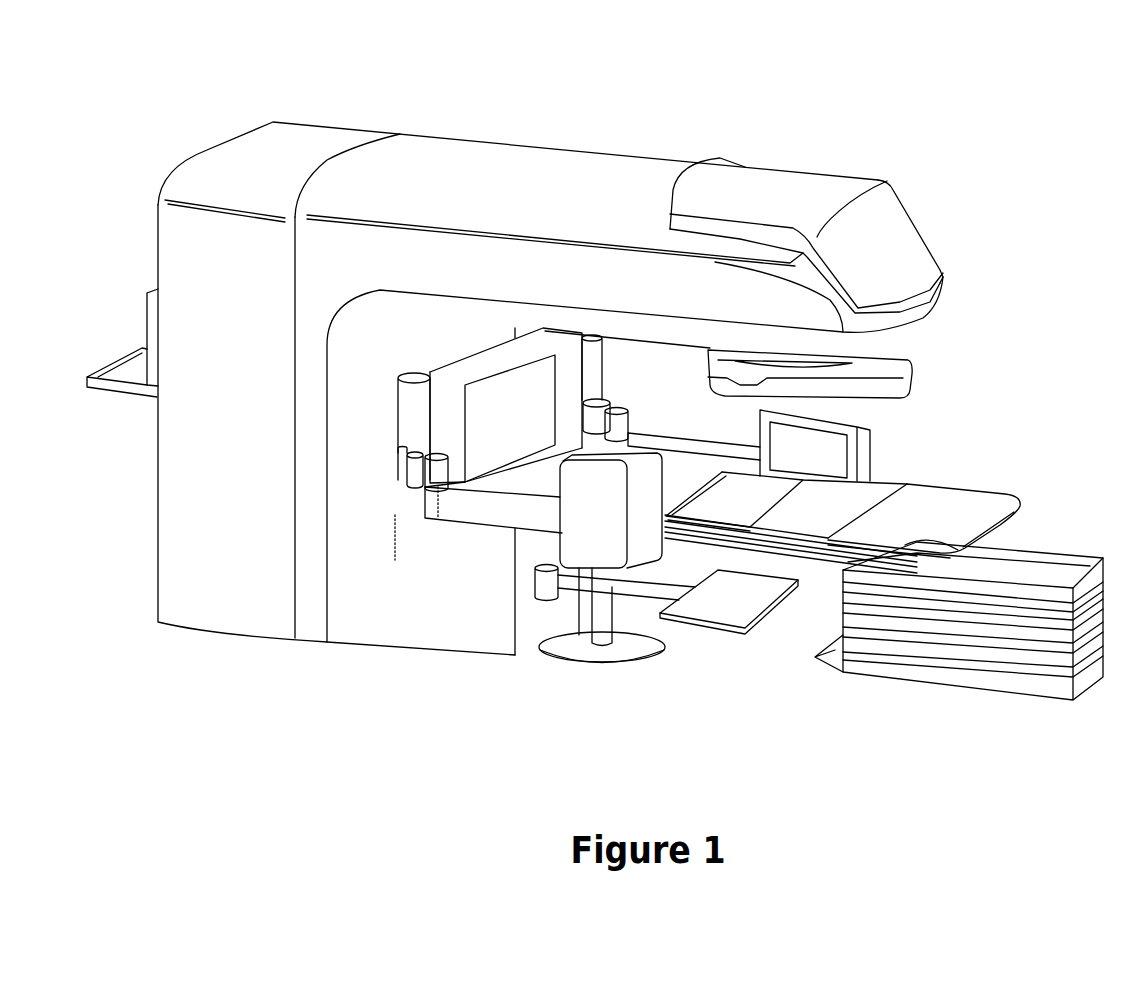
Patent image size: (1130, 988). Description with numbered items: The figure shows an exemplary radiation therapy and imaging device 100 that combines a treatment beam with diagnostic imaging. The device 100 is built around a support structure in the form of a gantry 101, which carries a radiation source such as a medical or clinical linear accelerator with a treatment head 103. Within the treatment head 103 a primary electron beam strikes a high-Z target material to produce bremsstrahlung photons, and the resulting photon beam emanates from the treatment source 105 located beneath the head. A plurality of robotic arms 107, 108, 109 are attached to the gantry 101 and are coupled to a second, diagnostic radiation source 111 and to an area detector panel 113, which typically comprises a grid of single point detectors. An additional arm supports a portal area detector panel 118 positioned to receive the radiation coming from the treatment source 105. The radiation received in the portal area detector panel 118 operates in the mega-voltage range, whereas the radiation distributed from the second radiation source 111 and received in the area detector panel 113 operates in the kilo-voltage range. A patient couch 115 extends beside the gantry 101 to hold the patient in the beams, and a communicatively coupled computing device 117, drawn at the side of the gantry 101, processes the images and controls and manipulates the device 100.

The radiation therapy and imaging device 100 is at (977, 39).
The gantry 101 is at (486, 178).
The treatment head 103 is at (900, 230).
The treatment source 105 is at (912, 362).
The robotic arm 107 is at (472, 527).
The robotic arm 108 is at (643, 600).
The robotic arm 109 is at (695, 440).
The second radiation source 111 is at (576, 570).
The area detector panel 113 is at (875, 460).
The patient couch 115 is at (1003, 495).
The computing device 117 is at (157, 285).
The portal area detector panel 118 is at (735, 617).